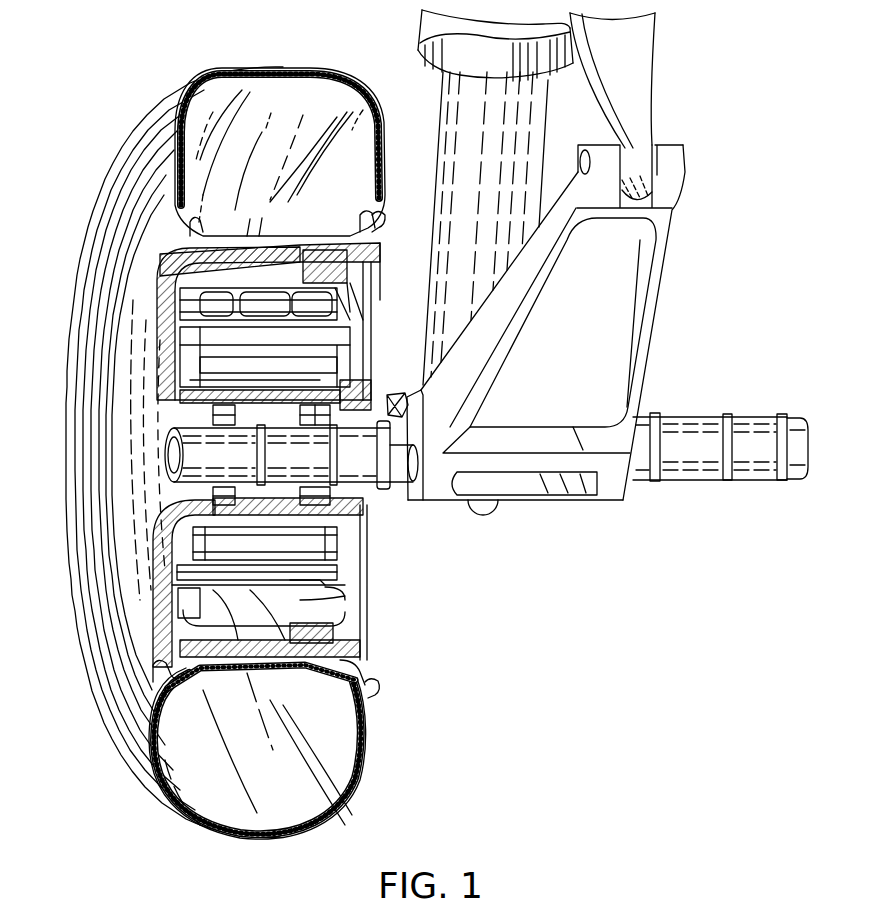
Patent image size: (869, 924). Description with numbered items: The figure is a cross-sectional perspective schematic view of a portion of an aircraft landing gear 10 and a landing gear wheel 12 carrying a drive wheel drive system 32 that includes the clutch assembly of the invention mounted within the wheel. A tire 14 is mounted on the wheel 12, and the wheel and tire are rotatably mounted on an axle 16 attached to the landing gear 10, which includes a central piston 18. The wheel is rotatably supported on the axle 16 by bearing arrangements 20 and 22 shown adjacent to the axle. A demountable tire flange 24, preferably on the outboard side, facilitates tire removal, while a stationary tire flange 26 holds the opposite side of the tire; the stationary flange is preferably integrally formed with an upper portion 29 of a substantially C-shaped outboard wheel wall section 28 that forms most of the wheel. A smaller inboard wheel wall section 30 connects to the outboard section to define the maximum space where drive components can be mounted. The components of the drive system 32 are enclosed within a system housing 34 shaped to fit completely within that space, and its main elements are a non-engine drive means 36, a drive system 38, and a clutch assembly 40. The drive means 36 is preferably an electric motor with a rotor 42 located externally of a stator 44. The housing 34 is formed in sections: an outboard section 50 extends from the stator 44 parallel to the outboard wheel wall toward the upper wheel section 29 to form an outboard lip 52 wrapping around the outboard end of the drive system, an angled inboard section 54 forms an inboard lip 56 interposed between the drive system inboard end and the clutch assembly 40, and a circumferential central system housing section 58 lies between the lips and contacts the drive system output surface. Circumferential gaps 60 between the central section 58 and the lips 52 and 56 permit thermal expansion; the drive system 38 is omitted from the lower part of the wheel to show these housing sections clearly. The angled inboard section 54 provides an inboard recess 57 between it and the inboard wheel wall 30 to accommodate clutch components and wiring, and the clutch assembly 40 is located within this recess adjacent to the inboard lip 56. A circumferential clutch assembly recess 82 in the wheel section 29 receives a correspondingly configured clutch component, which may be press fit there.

The landing gear 10 is at (713, 218).
The landing gear wheel 12 is at (100, 547).
The tire 14 is at (167, 110).
The axle 16 is at (173, 455).
The central piston 18 is at (503, 160).
The bearing arrangement 20 is at (227, 510).
The bearing arrangement 22 is at (310, 506).
The demountable tire flange 24 is at (185, 240).
The stationary tire flange 26 is at (374, 224).
The outboard wheel wall section 28 is at (167, 312).
The upper portion 29 is at (233, 257).
The inboard wheel wall section 30 is at (373, 327).
The drive wheel drive system 32 is at (357, 300).
The system housing 34 is at (163, 350).
The non-engine drive means 36 is at (350, 357).
The drive system 38 is at (250, 300).
The clutch assembly 40 is at (350, 265).
The rotor 42 is at (323, 574).
The stator 44 is at (340, 545).
The outboard section 50 is at (173, 585).
The outboard lip 52 is at (185, 622).
The inboard section 54 is at (345, 590).
The inboard lip 56 is at (337, 600).
The inboard recess 57 is at (367, 320).
The central system housing section 58 is at (250, 613).
The circumferential gaps 60 is at (208, 615).
The clutch assembly recess 82 is at (350, 655).